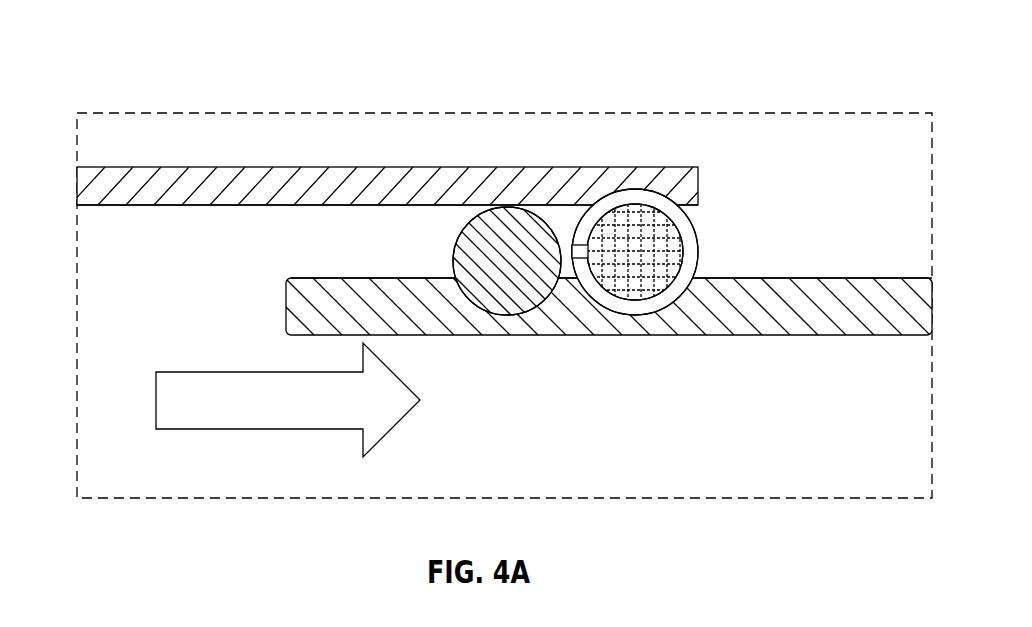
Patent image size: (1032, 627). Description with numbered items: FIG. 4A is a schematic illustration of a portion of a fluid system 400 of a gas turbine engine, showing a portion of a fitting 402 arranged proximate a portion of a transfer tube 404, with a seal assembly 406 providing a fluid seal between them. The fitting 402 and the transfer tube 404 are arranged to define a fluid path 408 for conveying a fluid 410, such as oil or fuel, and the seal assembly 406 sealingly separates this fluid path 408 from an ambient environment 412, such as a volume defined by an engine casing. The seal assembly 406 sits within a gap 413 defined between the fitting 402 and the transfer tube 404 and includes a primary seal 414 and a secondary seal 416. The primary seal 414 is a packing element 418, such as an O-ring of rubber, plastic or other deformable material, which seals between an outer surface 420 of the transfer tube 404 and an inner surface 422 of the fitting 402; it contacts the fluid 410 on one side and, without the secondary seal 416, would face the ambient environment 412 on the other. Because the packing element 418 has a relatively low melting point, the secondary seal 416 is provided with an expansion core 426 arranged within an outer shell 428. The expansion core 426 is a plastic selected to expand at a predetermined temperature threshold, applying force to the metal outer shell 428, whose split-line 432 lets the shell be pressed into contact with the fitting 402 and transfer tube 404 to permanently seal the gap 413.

The fluid system 400 is at (99, 33).
The fitting 402 is at (252, 180).
The transfer tube 404 is at (855, 335).
The seal assembly 406 is at (589, 137).
The fluid path 408 is at (624, 415).
The fluid 410 is at (305, 429).
The ambient environment 412 is at (909, 243).
The gap 413 is at (225, 244).
The primary seal 414 is at (444, 259).
The secondary seal 416 is at (708, 254).
The packing element 418 is at (510, 230).
The outer surface of the transfer tube 420 is at (340, 278).
The inner surface of the fitting 422 is at (389, 205).
The expansion core 426 is at (633, 278).
The outer shell 428 is at (682, 230).
The split-line 432 is at (580, 270).